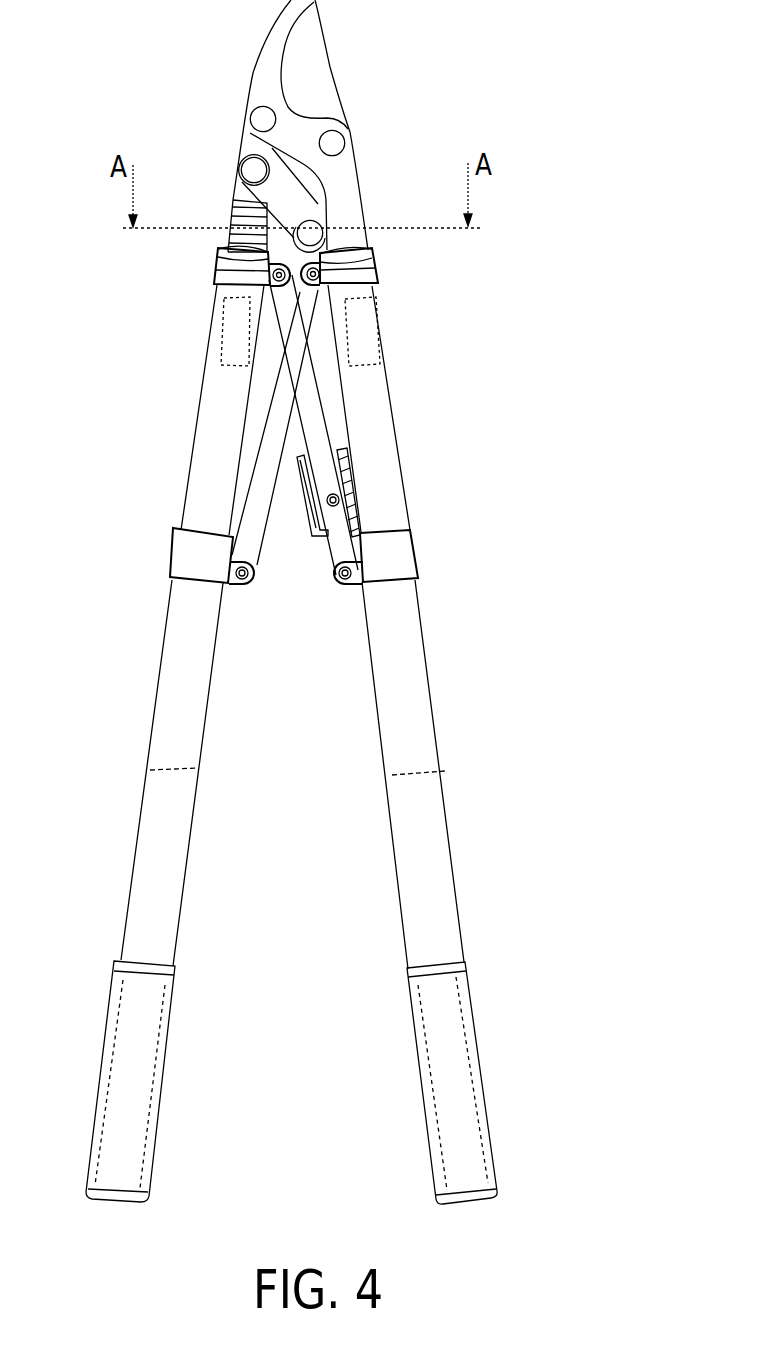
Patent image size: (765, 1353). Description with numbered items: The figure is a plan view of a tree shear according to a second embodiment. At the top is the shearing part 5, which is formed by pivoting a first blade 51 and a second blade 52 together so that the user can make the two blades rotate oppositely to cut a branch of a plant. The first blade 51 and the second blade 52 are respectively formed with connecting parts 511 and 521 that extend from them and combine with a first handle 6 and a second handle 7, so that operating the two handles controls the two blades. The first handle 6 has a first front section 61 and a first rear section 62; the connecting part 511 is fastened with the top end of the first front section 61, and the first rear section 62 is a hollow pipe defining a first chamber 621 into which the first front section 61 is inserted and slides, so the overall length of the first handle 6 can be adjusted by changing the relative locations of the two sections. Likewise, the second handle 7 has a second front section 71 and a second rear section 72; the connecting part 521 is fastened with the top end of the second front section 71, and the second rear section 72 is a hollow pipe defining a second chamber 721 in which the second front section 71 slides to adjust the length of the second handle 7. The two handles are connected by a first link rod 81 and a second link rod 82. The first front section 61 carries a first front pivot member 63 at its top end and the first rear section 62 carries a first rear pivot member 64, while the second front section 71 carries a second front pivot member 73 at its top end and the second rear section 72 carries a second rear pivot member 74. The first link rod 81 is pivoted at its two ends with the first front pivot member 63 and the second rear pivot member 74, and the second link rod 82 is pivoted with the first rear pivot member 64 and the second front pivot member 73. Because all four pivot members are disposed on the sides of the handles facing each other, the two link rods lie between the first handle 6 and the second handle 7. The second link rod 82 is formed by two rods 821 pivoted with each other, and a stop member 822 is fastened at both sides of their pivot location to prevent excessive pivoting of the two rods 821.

The shearing part 5 is at (236, 47).
The first blade 51 is at (350, 200).
The second blade 52 is at (312, 78).
The connecting part 511 is at (368, 317).
The connecting part 521 is at (223, 320).
The first handle 6 is at (515, 505).
The first front section 61 is at (400, 522).
The first rear section 62 is at (422, 613).
The first chamber 621 is at (440, 807).
The first front pivot member 63 is at (373, 287).
The first rear pivot member 64 is at (350, 592).
The second handle 7 is at (97, 483).
The second front section 71 is at (187, 502).
The second rear section 72 is at (170, 605).
The second chamber 721 is at (150, 828).
The second front pivot member 73 is at (263, 297).
The second rear pivot member 74 is at (233, 588).
The first link rod 81 is at (270, 488).
The second link rod 82 is at (537, 403).
The rods 821 is at (345, 460).
The stop member 822 is at (343, 443).